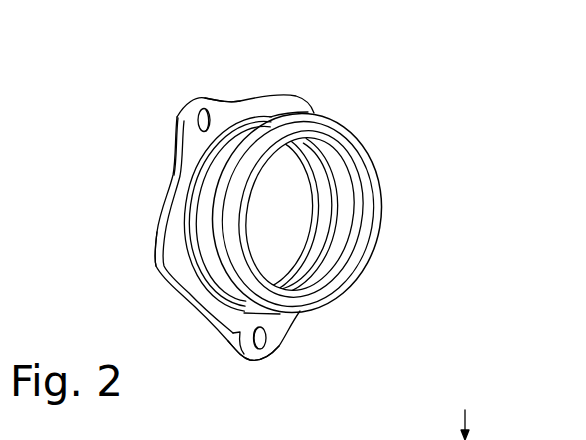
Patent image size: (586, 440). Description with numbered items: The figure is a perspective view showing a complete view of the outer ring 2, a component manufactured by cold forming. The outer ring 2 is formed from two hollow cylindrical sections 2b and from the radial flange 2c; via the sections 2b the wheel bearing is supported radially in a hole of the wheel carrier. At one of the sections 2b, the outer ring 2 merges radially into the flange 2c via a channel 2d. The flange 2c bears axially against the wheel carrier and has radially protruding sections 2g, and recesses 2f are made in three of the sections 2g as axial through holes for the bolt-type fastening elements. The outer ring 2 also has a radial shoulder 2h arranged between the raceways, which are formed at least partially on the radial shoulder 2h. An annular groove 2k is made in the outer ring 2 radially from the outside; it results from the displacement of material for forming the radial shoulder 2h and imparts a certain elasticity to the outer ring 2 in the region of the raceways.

The outer ring 2 is at (284, 225).
The hollow cylindrical sections 2b is at (277, 120).
The radial flange 2c is at (193, 283).
The channel 2d is at (190, 177).
The recesses 2f is at (203, 108).
The radially protruding sections 2g is at (187, 125).
The radial shoulder 2h is at (333, 239).
The annular groove 2k is at (212, 203).